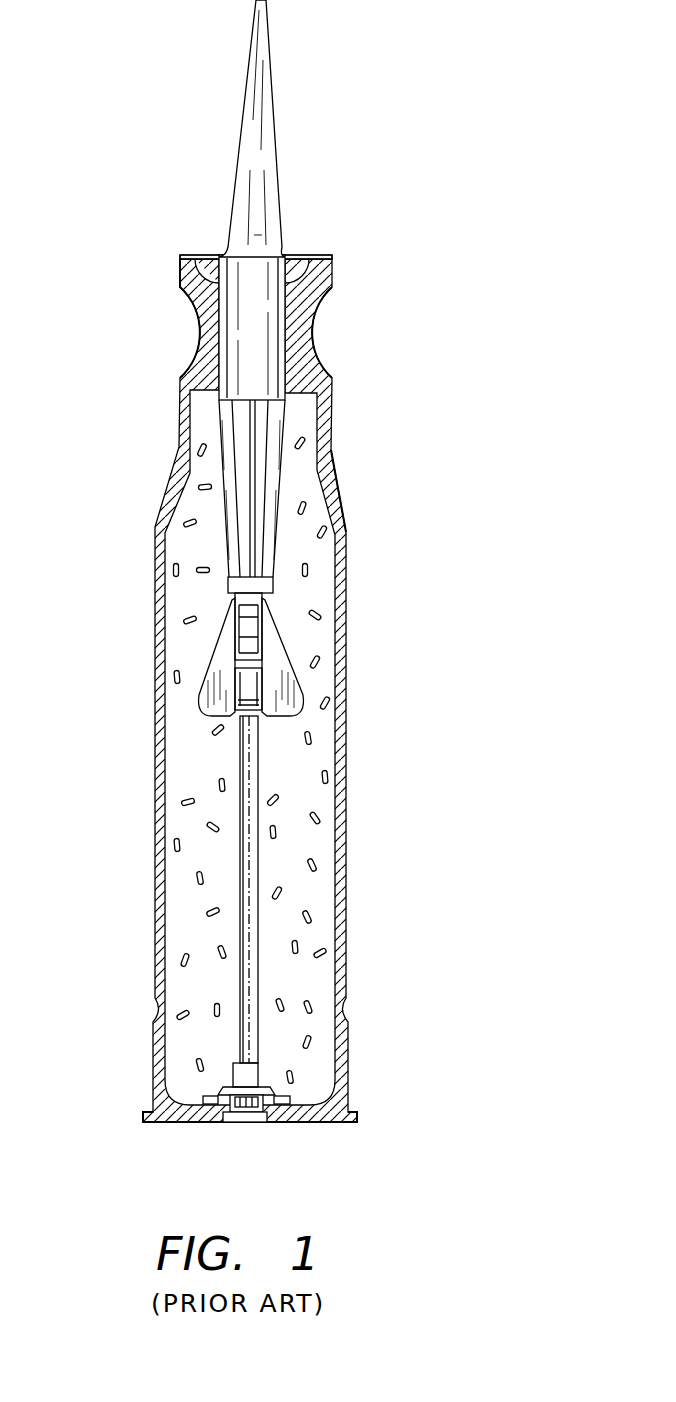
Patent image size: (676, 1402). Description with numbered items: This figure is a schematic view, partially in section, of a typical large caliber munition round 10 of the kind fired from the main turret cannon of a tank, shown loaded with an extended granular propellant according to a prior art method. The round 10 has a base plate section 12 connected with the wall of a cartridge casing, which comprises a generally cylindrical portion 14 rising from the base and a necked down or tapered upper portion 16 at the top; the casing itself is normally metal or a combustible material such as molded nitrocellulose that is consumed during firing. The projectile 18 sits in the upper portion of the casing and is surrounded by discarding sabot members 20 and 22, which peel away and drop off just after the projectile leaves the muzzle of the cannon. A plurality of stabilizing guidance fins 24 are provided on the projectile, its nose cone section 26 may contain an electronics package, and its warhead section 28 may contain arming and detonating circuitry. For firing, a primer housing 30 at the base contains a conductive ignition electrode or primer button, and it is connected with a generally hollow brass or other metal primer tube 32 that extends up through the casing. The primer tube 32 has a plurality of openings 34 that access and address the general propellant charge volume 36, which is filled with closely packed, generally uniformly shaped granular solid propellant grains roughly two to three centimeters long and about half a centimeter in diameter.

The round 10 is at (393, 857).
The base plate section 12 is at (303, 1123).
The cylindrical portion 14 is at (346, 950).
The tapered upper portion 16 is at (340, 493).
The projectile 18 is at (287, 253).
The discarding sabot member 20 is at (192, 287).
The discarding sabot member 22 is at (302, 273).
The stabilizing guidance fins 24 is at (199, 697).
The nose cone section 26 is at (247, 103).
The warhead section 28 is at (205, 327).
The primer housing 30 is at (218, 1093).
The primer tube 32 is at (238, 892).
The openings 34 is at (250, 833).
The propellant charge volume 36 is at (320, 803).